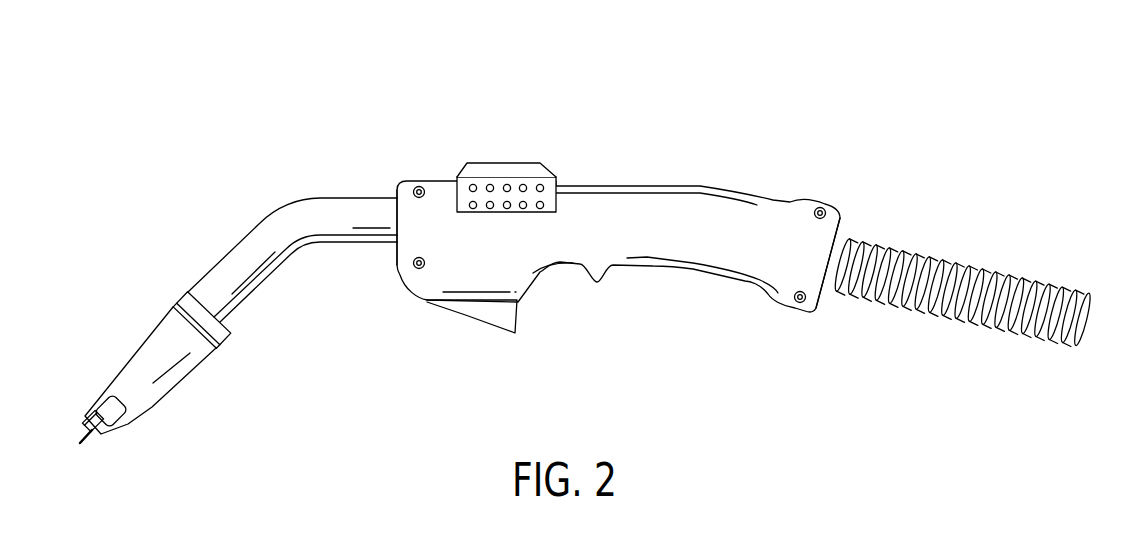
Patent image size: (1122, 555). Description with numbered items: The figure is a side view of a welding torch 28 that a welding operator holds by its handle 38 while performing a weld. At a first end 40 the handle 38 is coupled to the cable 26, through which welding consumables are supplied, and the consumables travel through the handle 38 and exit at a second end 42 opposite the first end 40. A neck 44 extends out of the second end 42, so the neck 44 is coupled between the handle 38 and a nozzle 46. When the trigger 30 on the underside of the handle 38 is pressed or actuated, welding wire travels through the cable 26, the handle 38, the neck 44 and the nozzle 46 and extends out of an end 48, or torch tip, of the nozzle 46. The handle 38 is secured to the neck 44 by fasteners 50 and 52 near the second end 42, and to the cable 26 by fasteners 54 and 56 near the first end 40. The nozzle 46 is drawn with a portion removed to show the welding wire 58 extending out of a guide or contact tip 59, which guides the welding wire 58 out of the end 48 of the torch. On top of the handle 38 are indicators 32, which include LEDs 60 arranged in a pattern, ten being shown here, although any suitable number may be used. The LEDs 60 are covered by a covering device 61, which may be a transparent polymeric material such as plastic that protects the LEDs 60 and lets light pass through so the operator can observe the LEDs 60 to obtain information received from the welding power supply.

The cable 26 is at (991, 310).
The welding torch 28 is at (476, 50).
The trigger 30 is at (477, 310).
The indicators 32 is at (489, 156).
The handle 38 is at (630, 213).
The first end 40 is at (817, 235).
The second end 42 is at (396, 192).
The neck 44 is at (234, 254).
The nozzle 46 is at (142, 340).
The end 48 is at (92, 438).
The fastener 50 is at (424, 189).
The fastener 52 is at (418, 267).
The fastener 54 is at (822, 207).
The fastener 56 is at (798, 304).
The welding wire 58 is at (93, 447).
The guide or contact tip 59 is at (121, 427).
The LEDs 60 is at (544, 206).
The covering device 61 is at (520, 170).